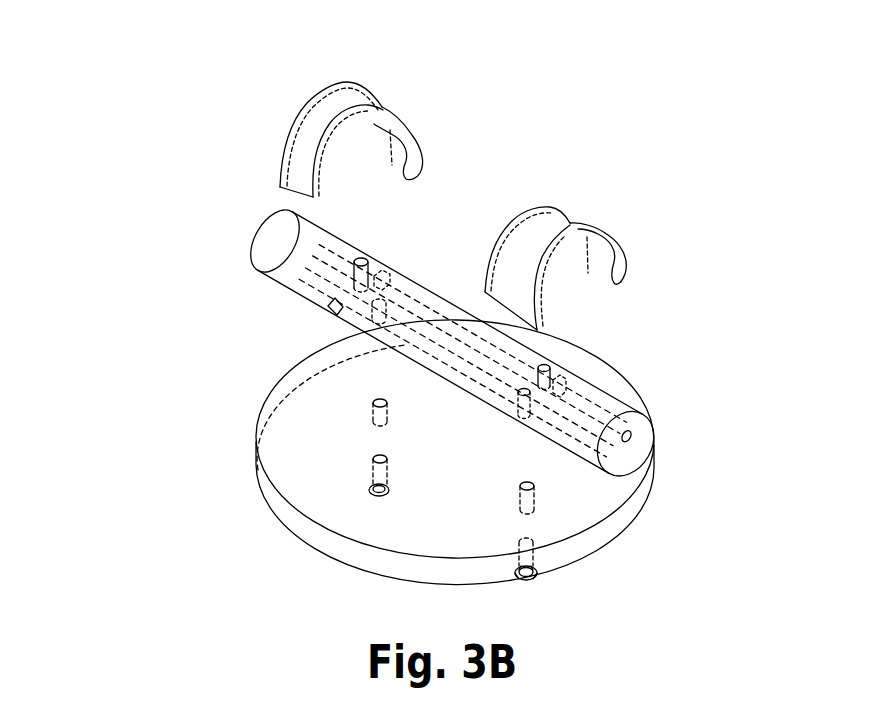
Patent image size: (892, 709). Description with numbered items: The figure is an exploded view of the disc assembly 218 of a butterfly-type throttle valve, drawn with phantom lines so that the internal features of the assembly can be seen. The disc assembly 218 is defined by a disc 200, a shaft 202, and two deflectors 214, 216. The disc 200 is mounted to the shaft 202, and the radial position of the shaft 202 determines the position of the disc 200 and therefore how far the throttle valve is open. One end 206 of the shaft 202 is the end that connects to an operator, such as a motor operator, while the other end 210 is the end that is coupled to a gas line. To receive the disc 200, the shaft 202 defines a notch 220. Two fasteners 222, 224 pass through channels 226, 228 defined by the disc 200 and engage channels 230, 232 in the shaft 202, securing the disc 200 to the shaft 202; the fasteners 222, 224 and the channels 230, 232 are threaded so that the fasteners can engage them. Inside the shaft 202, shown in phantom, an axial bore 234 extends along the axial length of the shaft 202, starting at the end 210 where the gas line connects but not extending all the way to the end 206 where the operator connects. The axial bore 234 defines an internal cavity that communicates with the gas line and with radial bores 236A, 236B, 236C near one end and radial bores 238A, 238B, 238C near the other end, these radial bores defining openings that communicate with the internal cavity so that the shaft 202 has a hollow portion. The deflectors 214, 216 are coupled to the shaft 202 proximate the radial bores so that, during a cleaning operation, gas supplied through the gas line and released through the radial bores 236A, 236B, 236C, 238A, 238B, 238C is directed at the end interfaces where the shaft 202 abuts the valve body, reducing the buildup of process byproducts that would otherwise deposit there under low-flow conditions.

The disc 200 is at (373, 520).
The shaft 202 is at (287, 277).
The end 206 is at (270, 240).
The end 210 is at (627, 455).
The deflector 214 is at (375, 110).
The deflector 216 is at (555, 262).
The disc assembly 218 is at (200, 97).
The notch 220 is at (352, 268).
The fastener 222 is at (371, 481).
The fastener 224 is at (537, 580).
The channel 226 is at (372, 406).
The channel 228 is at (533, 502).
The channel 230 is at (372, 303).
The channel 232 is at (537, 373).
The axial bore 234 is at (593, 415).
The radial bore 236A is at (357, 258).
The radial bore 236B is at (332, 313).
The radial bore 236C is at (392, 270).
The radial bore 238A is at (549, 363).
The radial bore 238B is at (517, 413).
The radial bore 238C is at (572, 383).